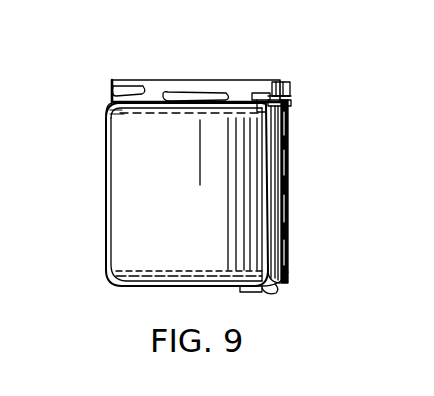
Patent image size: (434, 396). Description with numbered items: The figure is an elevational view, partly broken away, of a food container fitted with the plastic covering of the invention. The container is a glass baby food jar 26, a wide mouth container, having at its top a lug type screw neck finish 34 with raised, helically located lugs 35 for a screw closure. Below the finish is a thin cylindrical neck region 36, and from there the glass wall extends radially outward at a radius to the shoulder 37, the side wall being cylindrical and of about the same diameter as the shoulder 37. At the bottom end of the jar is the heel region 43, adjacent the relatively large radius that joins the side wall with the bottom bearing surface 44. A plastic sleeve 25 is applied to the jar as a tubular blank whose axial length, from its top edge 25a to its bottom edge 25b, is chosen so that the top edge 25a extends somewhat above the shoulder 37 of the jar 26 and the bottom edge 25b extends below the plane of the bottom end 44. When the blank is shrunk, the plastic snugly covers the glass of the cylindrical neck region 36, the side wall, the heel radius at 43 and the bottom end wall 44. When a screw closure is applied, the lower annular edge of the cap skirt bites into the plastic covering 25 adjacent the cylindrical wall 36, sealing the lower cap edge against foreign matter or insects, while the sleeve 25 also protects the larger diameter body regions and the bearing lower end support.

The plastic sleeve 25 is at (289, 185).
The top edge of sleeve 25a is at (291, 102).
The bottom edge of sleeve 25b is at (250, 292).
The glass baby food jar 26 is at (222, 223).
The lug type screw neck finish 34 is at (290, 86).
The raised lugs 35 is at (219, 97).
The cylindrical neck region 36 is at (263, 106).
The shoulder 37 is at (106, 101).
The heel region 43 is at (286, 283).
The bottom bearing surface 44 is at (276, 291).